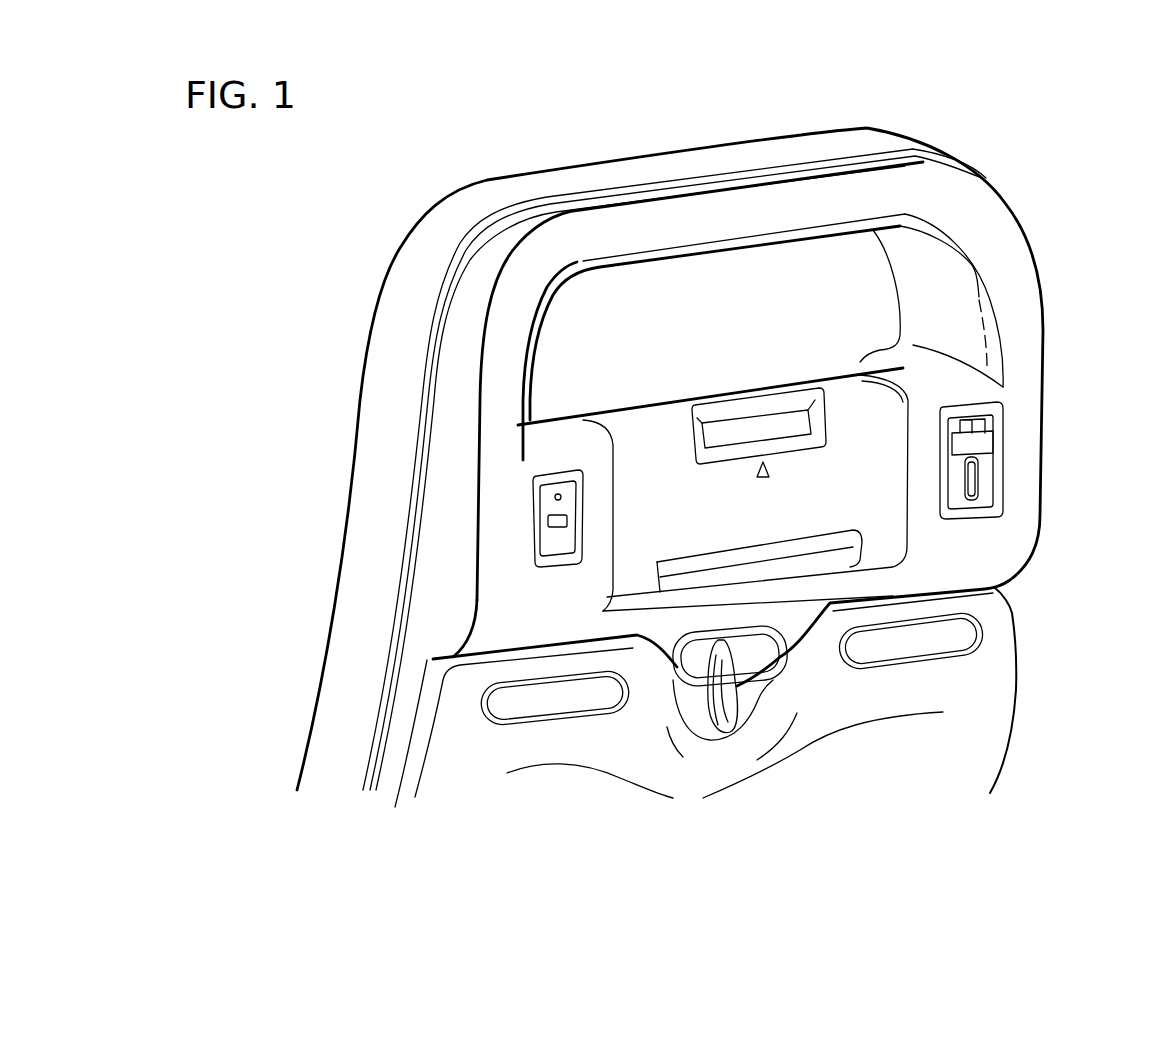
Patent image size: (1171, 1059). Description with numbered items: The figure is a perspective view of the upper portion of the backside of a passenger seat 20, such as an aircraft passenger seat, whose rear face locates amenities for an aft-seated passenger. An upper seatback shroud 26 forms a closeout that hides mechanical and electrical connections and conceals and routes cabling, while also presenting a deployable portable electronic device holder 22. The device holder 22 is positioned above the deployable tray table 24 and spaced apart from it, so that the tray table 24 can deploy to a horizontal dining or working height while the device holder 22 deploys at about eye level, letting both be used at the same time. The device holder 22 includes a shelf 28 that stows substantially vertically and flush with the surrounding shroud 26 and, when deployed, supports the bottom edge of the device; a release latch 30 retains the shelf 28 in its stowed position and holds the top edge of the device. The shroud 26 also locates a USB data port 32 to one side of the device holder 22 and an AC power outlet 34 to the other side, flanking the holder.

The passenger seat 20 is at (705, 426).
The portable electronic device holder 22 is at (828, 375).
The deployable tray table 24 is at (1003, 600).
The upper seatback shroud 26 is at (1033, 354).
The shelf 28 is at (875, 410).
The release latch 30 is at (753, 390).
The USB data port 32 is at (540, 511).
The AC power outlet 34 is at (990, 438).